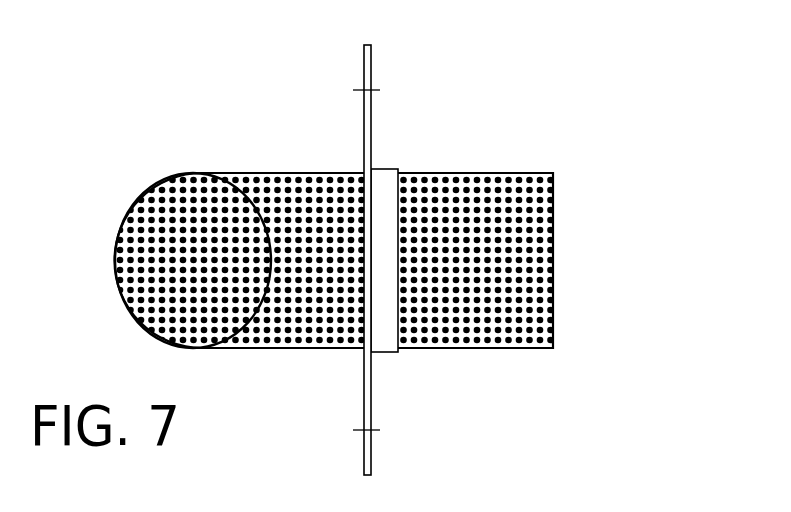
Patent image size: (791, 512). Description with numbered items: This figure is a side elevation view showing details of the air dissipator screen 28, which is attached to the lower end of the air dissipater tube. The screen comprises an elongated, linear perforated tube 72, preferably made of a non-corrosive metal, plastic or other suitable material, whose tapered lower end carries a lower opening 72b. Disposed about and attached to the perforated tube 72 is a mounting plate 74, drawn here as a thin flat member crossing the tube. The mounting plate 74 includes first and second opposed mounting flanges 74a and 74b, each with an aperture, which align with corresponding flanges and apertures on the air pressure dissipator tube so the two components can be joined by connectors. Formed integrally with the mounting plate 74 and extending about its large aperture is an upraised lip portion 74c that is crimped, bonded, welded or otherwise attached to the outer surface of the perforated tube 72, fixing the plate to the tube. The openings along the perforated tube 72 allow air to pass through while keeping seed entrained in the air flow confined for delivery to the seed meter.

The air dissipator screen 28 is at (420, 252).
The perforated tube 72 is at (475, 173).
The lower opening 72b is at (160, 220).
The mounting plate 74 is at (372, 120).
The first mounting flange 74a is at (363, 430).
The second mounting flange 74b is at (365, 90).
The upraised lip portion 74c is at (383, 353).